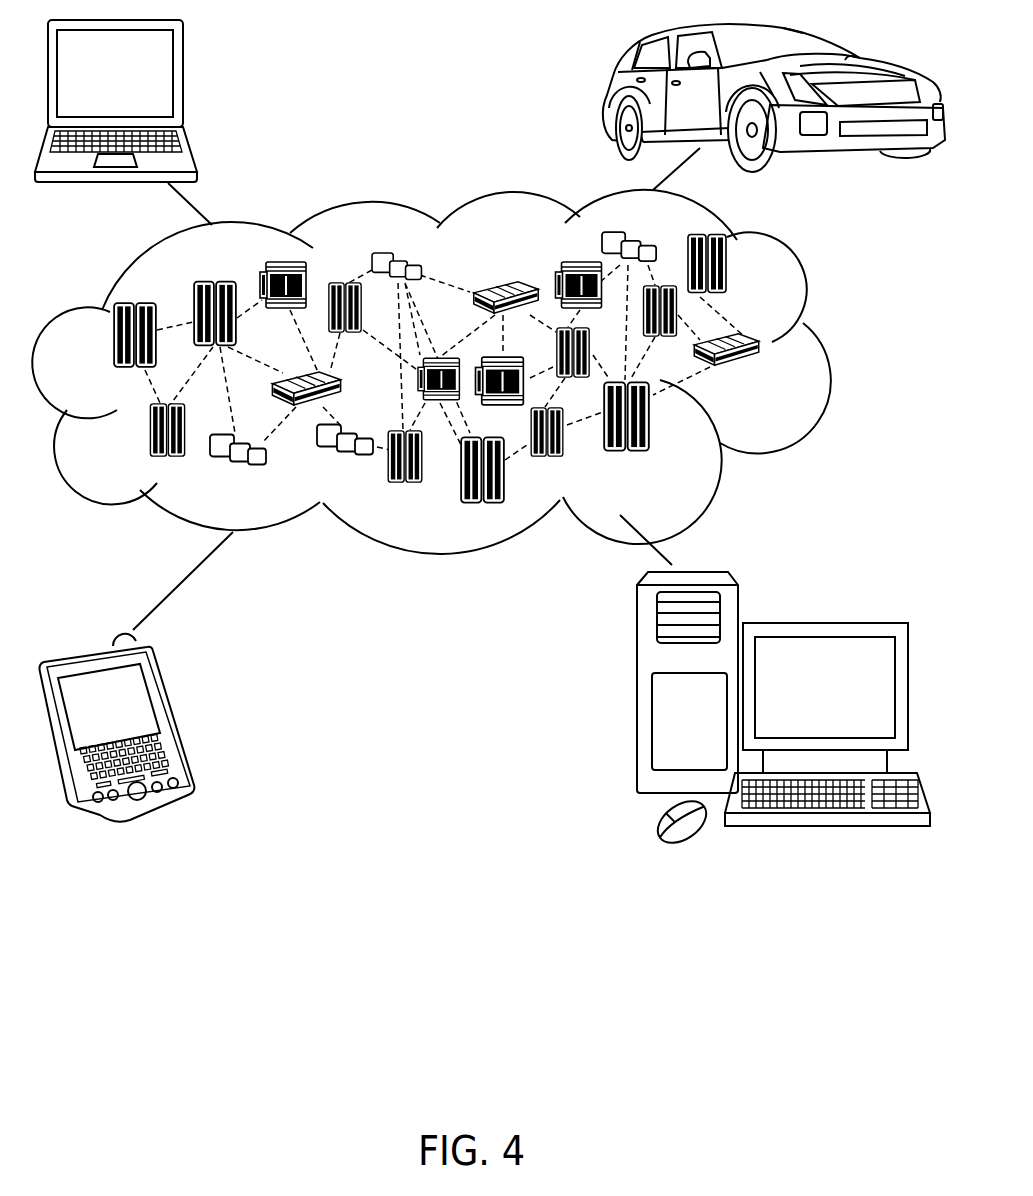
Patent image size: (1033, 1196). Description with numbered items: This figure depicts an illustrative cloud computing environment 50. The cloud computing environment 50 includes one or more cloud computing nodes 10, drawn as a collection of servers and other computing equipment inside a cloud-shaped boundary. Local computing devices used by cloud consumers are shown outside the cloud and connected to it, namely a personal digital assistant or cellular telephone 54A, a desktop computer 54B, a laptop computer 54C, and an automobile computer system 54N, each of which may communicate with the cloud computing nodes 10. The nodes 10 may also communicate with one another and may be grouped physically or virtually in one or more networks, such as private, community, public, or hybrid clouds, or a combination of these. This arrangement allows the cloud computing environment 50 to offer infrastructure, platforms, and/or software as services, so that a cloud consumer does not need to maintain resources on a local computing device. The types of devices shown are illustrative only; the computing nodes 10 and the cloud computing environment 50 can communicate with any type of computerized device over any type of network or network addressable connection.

The cloud computing environment 50 is at (823, 347).
The cloud computing node 10 is at (772, 381).
The personal digital assistant or cellular telephone 54A is at (172, 721).
The desktop computer 54B is at (823, 623).
The laptop computer 54C is at (184, 78).
The automobile computer system 54N is at (609, 96).